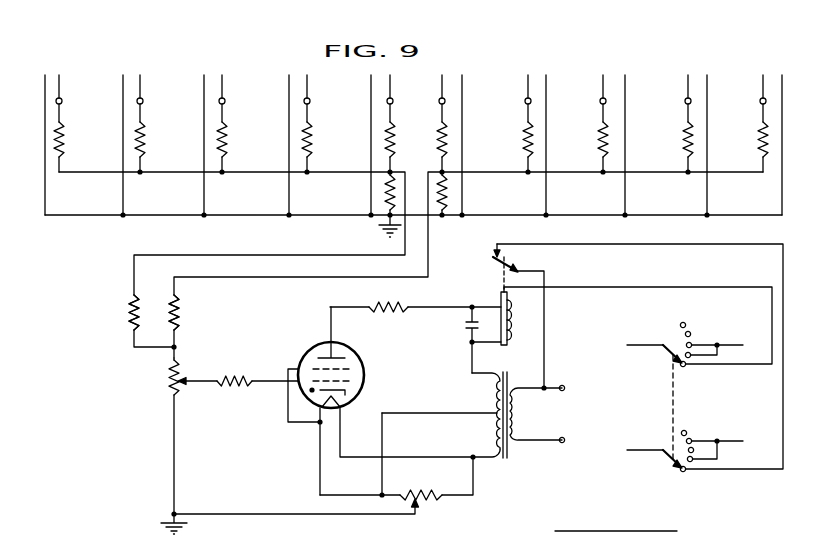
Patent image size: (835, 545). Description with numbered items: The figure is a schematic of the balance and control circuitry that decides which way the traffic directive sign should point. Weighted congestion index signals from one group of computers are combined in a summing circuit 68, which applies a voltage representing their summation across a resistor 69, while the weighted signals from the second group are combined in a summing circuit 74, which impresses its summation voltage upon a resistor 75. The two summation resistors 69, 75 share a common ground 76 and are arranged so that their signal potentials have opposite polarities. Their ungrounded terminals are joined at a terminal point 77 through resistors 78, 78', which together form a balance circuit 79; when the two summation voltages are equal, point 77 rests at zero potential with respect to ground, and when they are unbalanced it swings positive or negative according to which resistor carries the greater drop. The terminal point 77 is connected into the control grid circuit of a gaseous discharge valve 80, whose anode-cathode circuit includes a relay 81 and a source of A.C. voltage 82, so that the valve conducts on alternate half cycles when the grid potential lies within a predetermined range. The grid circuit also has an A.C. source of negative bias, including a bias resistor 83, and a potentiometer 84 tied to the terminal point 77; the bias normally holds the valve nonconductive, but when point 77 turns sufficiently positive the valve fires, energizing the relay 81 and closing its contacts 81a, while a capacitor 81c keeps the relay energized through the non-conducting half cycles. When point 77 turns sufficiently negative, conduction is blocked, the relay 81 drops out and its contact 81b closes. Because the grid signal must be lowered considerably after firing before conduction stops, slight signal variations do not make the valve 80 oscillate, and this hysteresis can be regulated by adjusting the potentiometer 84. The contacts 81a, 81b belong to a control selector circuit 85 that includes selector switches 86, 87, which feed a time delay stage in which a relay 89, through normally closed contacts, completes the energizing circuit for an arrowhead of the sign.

The summing circuit 68 is at (268, 131).
The summing circuit 74 is at (665, 131).
The resistor 69 is at (386, 186).
The resistor 75 is at (444, 199).
The common ground 76 is at (387, 223).
The terminal point 77 is at (172, 349).
The resistor 78 is at (134, 321).
The resistor 78' is at (195, 326).
The balance circuit 79 is at (163, 315).
The gaseous discharge valve 80 is at (359, 360).
The relay 81 is at (510, 322).
The contacts 81a is at (501, 279).
The contact 81b is at (500, 252).
The capacitor 81c is at (466, 329).
The source of A.C. voltage 82 is at (517, 421).
The bias resistor 83 is at (430, 499).
The potentiometer 84 is at (173, 384).
The control selector circuit 85 is at (680, 402).
The selector switch 86 is at (666, 351).
The selector switch 87 is at (667, 456).
The relay 89 is at (557, 535).